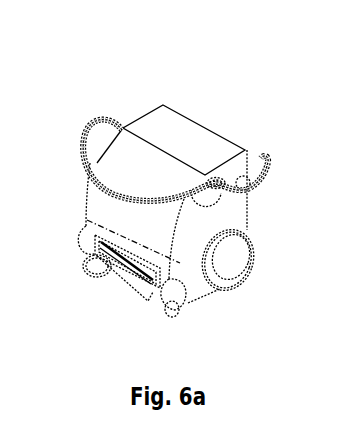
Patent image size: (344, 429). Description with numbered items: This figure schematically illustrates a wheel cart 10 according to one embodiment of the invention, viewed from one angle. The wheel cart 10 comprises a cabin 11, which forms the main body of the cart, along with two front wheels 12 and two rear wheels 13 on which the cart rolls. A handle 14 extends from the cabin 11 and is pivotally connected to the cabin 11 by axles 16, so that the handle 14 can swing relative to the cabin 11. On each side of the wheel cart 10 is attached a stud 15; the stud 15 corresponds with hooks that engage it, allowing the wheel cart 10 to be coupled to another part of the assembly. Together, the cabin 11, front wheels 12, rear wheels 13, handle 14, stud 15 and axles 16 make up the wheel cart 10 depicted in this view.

The wheel cart 10 is at (250, 95).
The cabin 11 is at (138, 179).
The front wheels 12 is at (88, 268).
The rear wheels 13 is at (231, 270).
The handle 14 is at (83, 143).
The stud 15 is at (250, 180).
The axles 16 is at (222, 190).